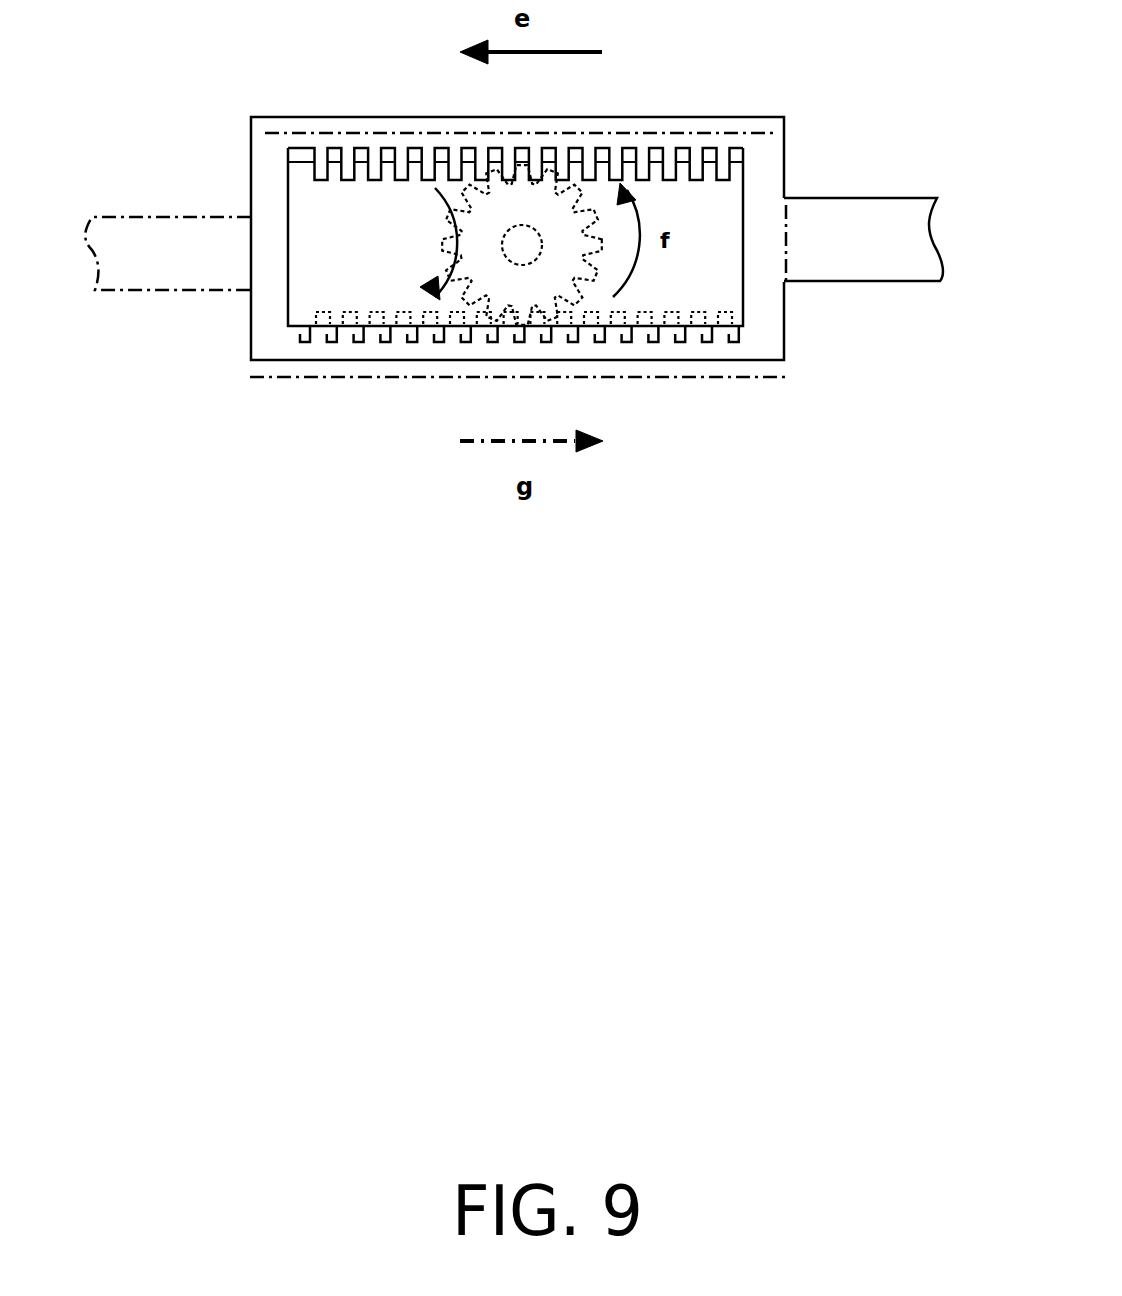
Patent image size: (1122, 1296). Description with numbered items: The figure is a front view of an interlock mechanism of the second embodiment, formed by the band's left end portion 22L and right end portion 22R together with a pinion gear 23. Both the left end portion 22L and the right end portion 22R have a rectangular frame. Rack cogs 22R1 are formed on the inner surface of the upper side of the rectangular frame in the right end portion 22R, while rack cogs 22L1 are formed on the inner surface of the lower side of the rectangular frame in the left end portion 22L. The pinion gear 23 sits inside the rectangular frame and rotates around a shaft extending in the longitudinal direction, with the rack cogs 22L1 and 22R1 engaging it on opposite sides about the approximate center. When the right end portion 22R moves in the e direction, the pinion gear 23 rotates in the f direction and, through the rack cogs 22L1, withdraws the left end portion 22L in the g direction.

The pinion gear 23 is at (533, 213).
The right end portion 22R is at (851, 218).
The rack cogs 22R1 is at (681, 168).
The left end portion 22L is at (165, 270).
The rack cogs 22L1 is at (697, 296).